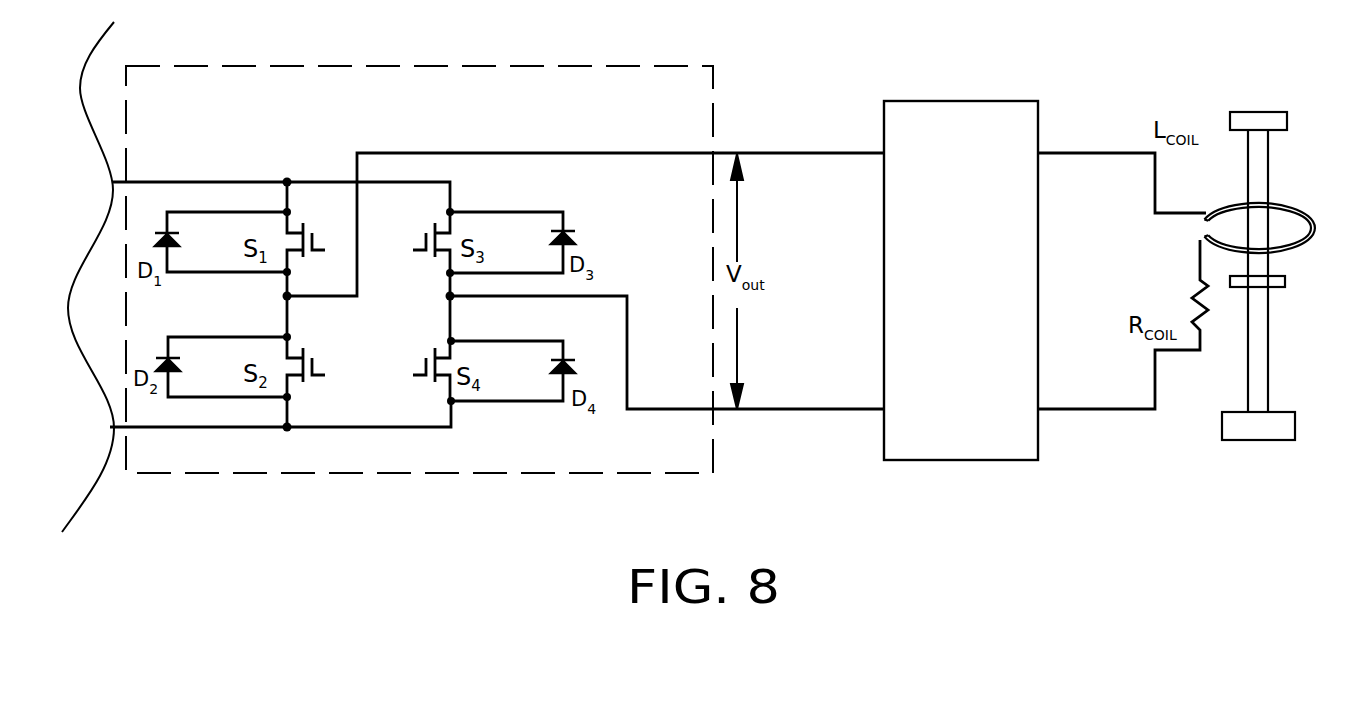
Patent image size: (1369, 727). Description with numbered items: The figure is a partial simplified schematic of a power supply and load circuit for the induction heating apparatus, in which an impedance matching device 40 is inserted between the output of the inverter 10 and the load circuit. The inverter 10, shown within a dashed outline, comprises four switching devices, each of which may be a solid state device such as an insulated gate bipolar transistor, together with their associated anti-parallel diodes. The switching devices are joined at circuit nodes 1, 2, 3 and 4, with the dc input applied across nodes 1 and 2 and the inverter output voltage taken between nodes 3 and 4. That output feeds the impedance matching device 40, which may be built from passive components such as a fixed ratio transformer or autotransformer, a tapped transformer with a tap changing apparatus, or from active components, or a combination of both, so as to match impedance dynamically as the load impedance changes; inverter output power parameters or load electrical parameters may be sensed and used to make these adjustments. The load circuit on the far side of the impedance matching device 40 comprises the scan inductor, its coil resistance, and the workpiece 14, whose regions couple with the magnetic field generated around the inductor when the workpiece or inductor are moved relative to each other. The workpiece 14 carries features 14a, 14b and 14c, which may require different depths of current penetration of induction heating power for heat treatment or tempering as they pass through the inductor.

The inverter 10 is at (464, 66).
The impedance matching device 40 is at (970, 291).
The workpiece 14 is at (1258, 166).
The workpiece feature 14a is at (1268, 122).
The workpiece feature 14b is at (1285, 281).
The workpiece feature 14c is at (1277, 425).
The circuit node 1 is at (284, 168).
The circuit node 2 is at (284, 442).
The circuit node 3 is at (276, 299).
The circuit node 4 is at (441, 299).